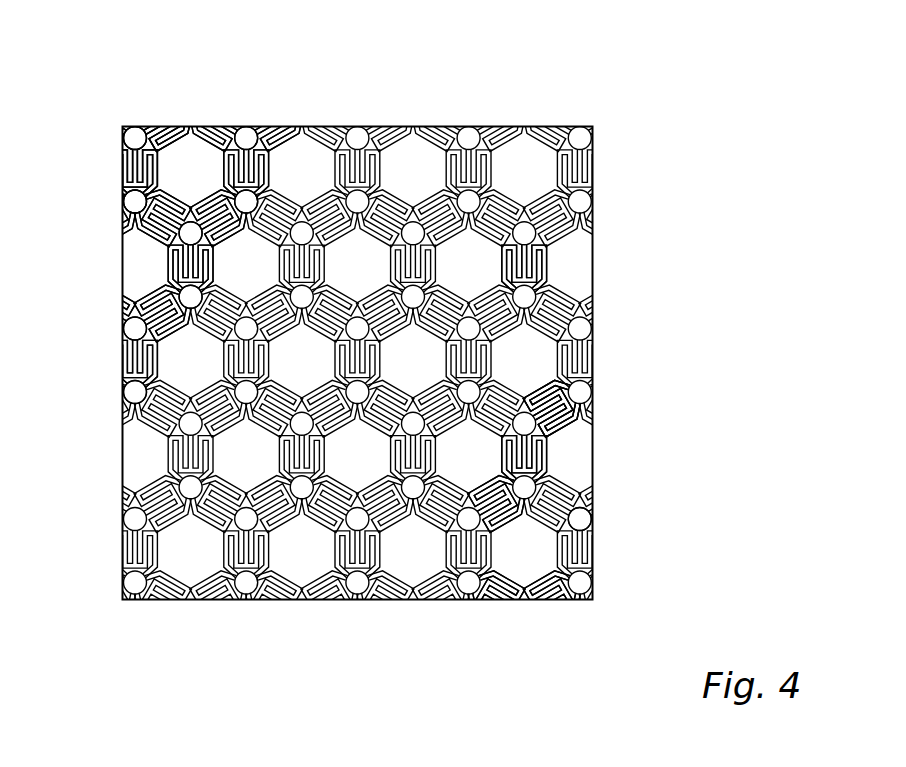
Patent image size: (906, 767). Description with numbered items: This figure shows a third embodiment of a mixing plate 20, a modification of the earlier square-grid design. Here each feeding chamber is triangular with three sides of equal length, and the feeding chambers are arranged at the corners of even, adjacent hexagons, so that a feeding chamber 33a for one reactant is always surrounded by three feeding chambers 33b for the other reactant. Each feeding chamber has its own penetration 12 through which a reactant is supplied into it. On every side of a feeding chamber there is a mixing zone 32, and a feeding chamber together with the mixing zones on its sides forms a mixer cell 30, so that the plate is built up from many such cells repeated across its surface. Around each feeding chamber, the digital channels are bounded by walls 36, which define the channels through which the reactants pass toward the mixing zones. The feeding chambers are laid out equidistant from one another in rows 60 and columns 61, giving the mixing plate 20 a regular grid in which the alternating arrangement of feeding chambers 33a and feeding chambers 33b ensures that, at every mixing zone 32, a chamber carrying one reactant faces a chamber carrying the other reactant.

The penetration 12 is at (581, 518).
The mixing plate 20 is at (513, 158).
The mixer cell 30 is at (562, 272).
The mixing zone 32 is at (535, 371).
The feeding chamber for one reactant 33a is at (542, 426).
The feeding chamber for the other reactant 33b is at (541, 476).
The wall 36 is at (530, 575).
The row 60 is at (106, 143).
The column 61 is at (135, 112).